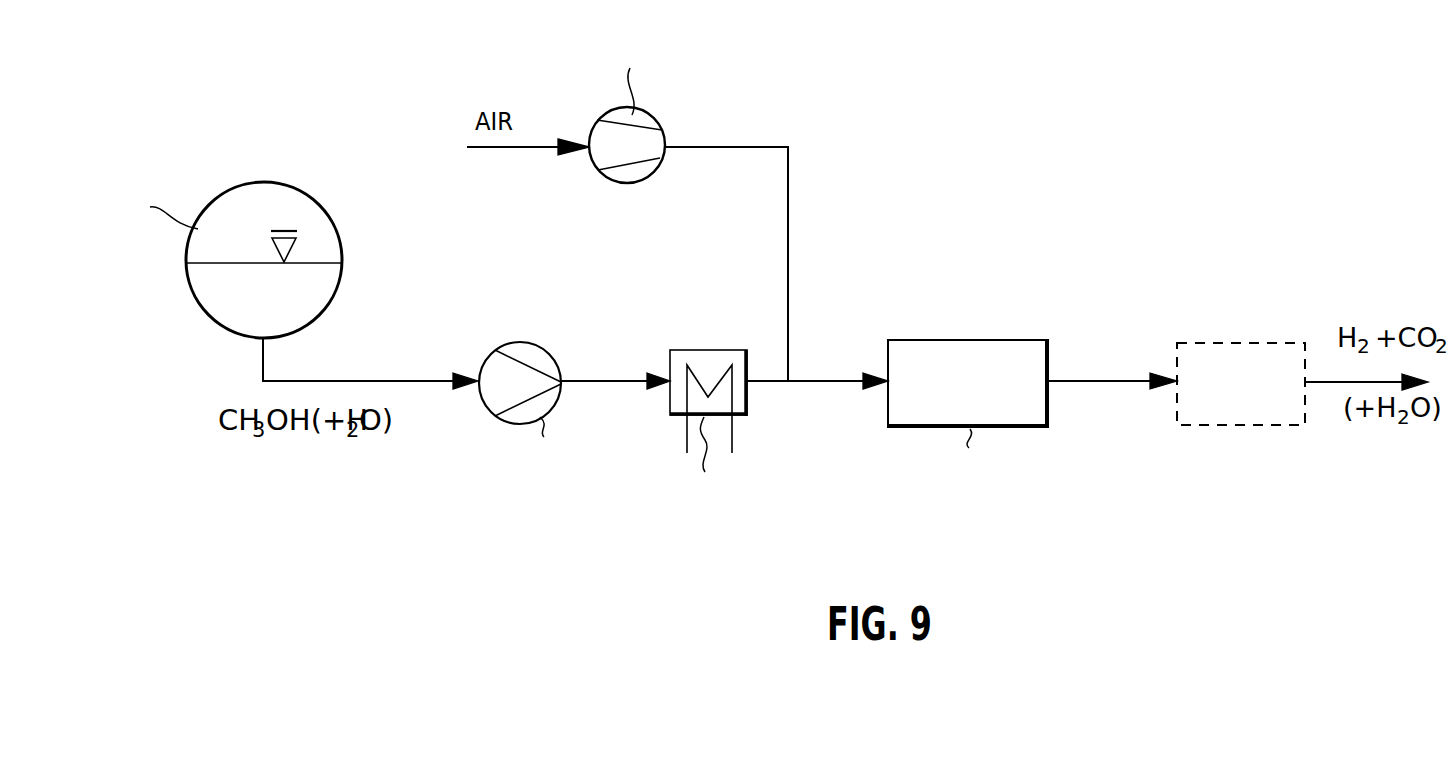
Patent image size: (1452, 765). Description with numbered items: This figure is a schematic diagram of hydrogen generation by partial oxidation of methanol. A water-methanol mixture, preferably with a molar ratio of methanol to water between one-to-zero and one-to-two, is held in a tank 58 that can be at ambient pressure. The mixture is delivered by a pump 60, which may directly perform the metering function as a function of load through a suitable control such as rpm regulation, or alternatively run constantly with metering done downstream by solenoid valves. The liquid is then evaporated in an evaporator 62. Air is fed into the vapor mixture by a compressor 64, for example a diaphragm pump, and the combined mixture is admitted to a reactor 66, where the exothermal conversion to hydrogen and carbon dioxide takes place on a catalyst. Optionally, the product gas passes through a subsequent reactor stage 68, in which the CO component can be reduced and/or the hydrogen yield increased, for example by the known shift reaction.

The tank 58 is at (187, 265).
The pump 60 is at (535, 344).
The evaporator 62 is at (702, 350).
The compressor 64 is at (657, 118).
The reactor 66 is at (948, 340).
The subsequent reactor stage 68 is at (1215, 348).